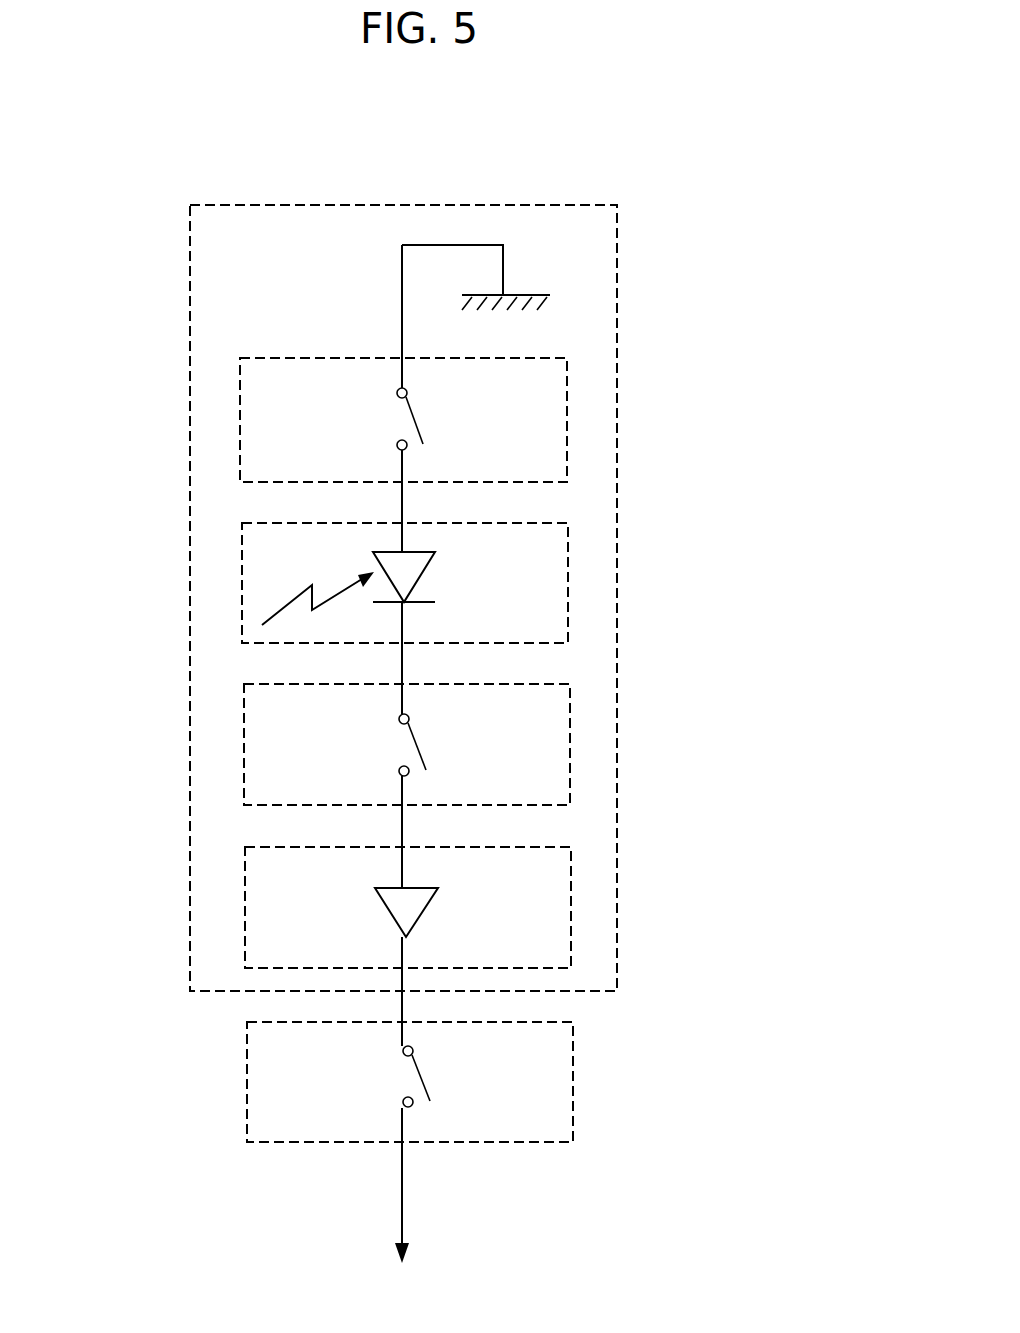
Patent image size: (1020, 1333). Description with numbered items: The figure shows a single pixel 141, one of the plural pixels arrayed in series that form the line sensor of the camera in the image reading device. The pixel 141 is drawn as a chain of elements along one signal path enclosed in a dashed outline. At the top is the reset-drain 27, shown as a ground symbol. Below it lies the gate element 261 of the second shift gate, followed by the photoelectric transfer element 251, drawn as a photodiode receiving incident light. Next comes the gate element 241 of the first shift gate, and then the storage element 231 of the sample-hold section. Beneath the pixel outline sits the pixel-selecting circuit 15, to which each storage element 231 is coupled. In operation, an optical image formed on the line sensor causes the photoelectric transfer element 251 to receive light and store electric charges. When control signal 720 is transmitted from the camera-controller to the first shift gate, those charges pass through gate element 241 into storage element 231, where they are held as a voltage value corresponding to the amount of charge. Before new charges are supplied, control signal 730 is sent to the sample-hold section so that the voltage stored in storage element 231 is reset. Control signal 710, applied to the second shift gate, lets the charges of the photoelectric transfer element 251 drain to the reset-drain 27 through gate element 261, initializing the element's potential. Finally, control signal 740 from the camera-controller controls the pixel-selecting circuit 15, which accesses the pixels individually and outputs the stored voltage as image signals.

The reset-drain 27 is at (503, 263).
The pixel 141 is at (617, 305).
The gate element of second shift gate 261 is at (232, 420).
The photoelectric transfer element 251 is at (232, 585).
The gate element of first shift gate 241 is at (242, 738).
The storage element 231 is at (244, 900).
The pixel-selecting circuit 15 is at (247, 1085).
The control signal 710 is at (397, 418).
The control signal 720 is at (401, 744).
The control signal 730 is at (405, 907).
The control signal 740 is at (418, 1082).